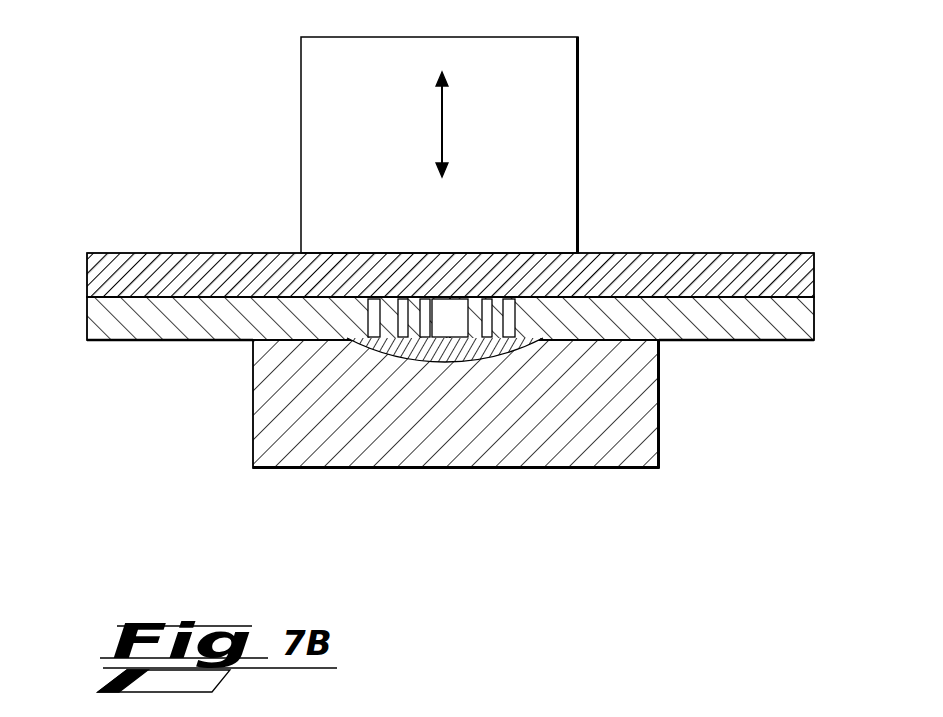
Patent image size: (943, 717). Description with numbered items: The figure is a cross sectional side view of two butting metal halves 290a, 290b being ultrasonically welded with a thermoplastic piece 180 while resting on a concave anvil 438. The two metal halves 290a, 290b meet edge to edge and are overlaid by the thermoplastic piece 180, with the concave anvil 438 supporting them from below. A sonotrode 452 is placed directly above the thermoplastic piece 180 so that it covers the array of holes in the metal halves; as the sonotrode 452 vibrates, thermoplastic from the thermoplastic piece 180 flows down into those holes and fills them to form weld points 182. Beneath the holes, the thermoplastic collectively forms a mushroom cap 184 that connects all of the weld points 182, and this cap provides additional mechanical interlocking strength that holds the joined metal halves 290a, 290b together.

The sonotrode 452 is at (580, 122).
The thermoplastic piece 180 is at (690, 263).
The weld points 182 is at (445, 292).
The mushroom cap 184 is at (445, 363).
The metal half 290a is at (740, 337).
The metal half 290b is at (87, 313).
The concave anvil 438 is at (660, 410).